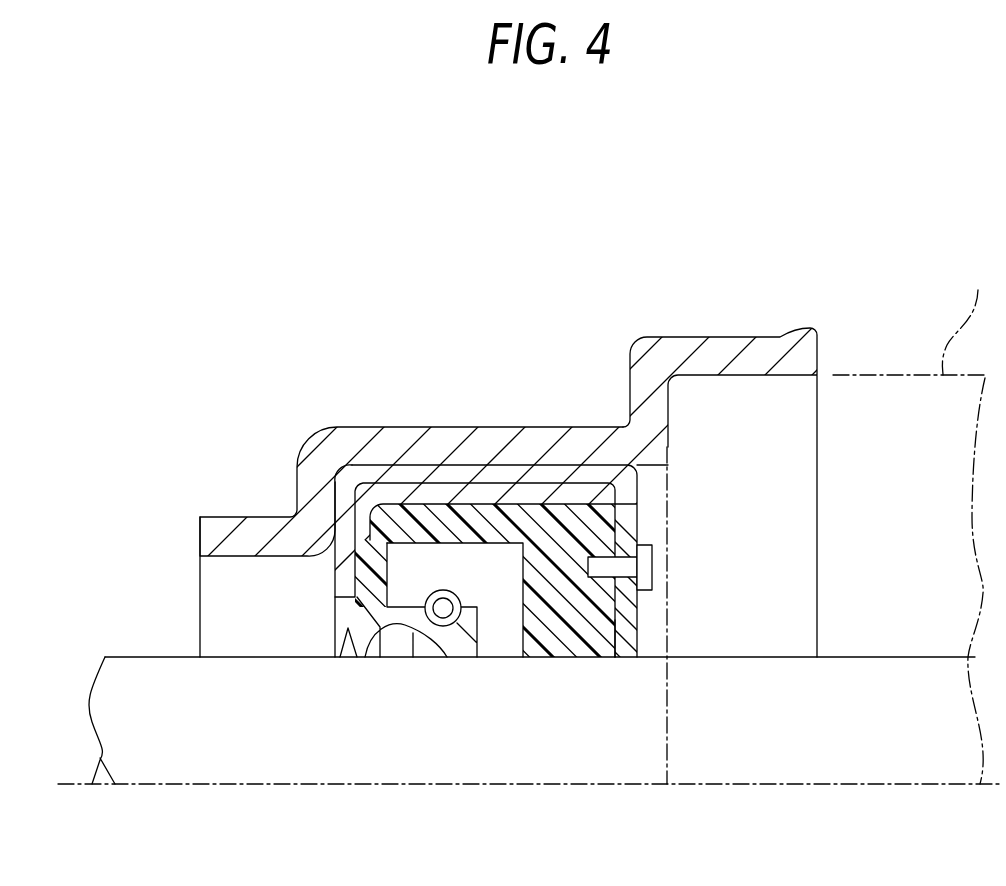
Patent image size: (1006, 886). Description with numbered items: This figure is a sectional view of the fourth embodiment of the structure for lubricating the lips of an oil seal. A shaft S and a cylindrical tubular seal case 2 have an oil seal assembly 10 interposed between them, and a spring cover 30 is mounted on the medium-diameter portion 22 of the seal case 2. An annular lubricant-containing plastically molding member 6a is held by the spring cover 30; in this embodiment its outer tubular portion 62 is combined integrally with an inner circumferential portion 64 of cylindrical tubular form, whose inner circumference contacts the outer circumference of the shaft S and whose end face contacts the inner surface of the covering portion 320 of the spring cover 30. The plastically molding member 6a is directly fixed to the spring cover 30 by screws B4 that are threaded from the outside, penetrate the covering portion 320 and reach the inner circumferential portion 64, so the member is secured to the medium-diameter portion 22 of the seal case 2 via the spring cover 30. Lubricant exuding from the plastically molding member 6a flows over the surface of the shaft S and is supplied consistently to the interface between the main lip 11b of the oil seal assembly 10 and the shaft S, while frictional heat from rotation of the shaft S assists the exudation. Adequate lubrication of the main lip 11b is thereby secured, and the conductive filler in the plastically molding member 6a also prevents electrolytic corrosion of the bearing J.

The seal case 2 is at (499, 577).
The medium-diameter portion 22 is at (443, 443).
The outer tubular portion 62 is at (492, 540).
The spring cover 30 is at (608, 462).
The oil seal assembly 10 is at (327, 598).
The main lip 11b is at (447, 650).
The plastically molding member 6a is at (545, 653).
The inner circumferential portion 64 is at (602, 650).
The covering portion 320 is at (628, 650).
The screws B4 is at (645, 560).
The shaft S is at (147, 770).
The bearing J is at (910, 521).